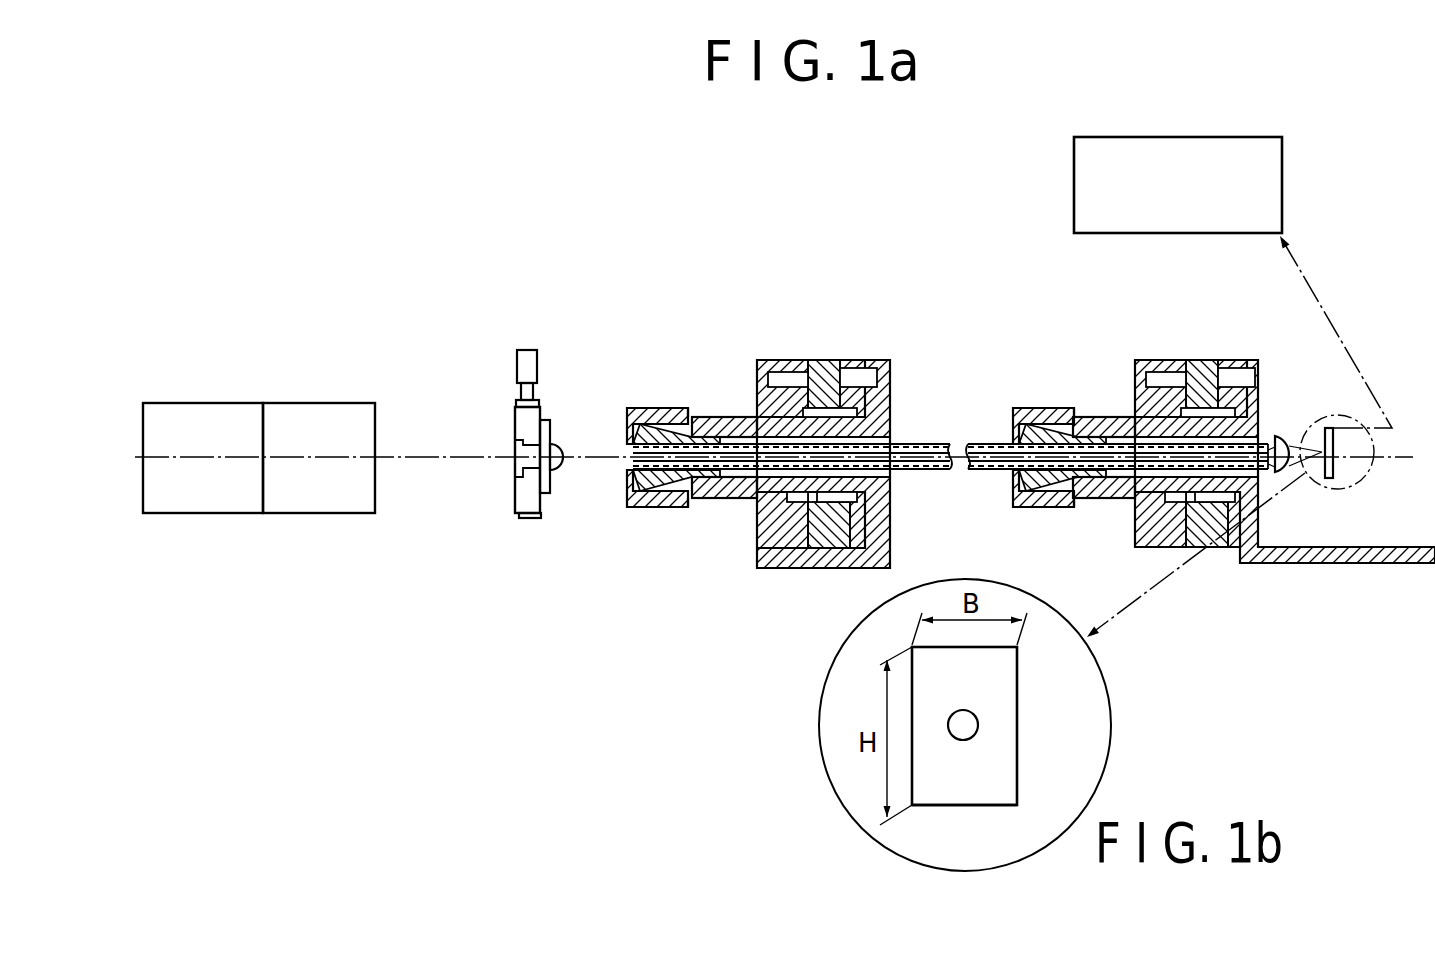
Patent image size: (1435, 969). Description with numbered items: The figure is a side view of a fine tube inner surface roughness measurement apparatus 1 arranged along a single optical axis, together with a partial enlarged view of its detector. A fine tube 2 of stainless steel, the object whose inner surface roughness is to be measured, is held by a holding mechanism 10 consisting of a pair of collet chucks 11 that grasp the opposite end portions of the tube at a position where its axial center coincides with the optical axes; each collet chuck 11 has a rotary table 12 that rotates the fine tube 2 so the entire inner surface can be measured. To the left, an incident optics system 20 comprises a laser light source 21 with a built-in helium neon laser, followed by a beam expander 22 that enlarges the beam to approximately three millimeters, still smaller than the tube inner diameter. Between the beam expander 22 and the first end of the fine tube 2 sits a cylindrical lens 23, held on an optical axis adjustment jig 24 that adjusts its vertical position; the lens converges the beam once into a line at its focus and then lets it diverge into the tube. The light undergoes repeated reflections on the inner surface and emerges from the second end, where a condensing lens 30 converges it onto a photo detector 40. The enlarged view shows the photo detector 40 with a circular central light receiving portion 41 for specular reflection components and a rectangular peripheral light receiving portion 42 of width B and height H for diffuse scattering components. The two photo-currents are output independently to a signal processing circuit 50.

In FIG. 1a, the fine tube inner surface roughness measurement apparatus 1 is at (470, 250).
In FIG. 1a, the fine tube 2 is at (941, 443).
In FIG. 1a, the holding mechanism 10 is at (856, 306).
In FIG. 1a, the collet chuck 11 is at (660, 408).
In FIG. 1a, the rotary table 12 is at (790, 360).
In FIG. 1a, the incident optics system 20 is at (557, 548).
In FIG. 1a, the laser light source 21 is at (203, 403).
In FIG. 1a, the beam expander 22 is at (327, 403).
In FIG. 1a, the cylindrical lens 23 is at (560, 440).
In FIG. 1a, the optical axis adjustment jig 24 is at (515, 368).
In FIG. 1a, the condensing lens 30 is at (1283, 436).
In FIG. 1a, the photo detector 40 is at (1335, 470).
In FIG. 1b, the photo detector 40 is at (1024, 691).
In FIG. 1b, the central light receiving portion 41 is at (978, 725).
In FIG. 1b, the peripheral light receiving portion 42 is at (1000, 782).
In FIG. 1a, the signal processing circuit 50 is at (1074, 188).